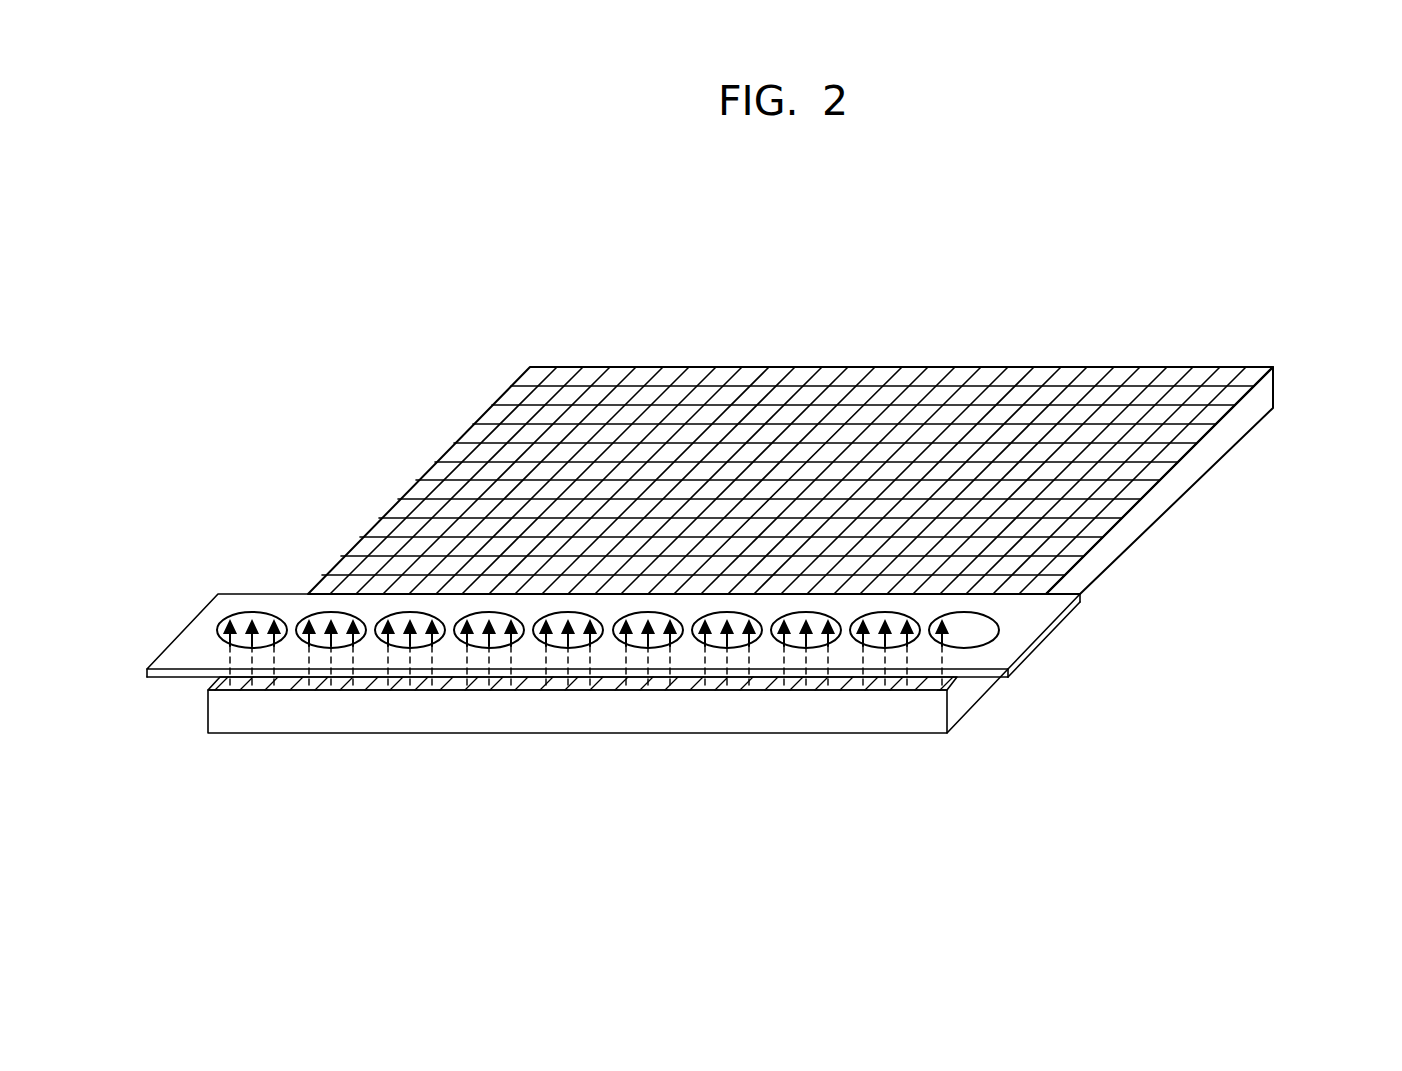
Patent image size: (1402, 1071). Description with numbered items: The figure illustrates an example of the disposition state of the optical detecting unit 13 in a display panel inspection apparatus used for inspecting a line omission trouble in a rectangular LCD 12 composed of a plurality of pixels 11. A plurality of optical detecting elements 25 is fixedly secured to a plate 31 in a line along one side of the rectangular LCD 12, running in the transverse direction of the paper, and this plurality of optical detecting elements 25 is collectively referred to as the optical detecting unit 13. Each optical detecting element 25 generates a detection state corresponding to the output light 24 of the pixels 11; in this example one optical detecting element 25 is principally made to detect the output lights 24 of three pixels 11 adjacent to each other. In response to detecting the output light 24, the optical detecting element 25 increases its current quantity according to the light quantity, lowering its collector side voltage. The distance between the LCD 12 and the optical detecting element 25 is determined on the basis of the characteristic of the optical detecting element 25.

The pixel 11 is at (268, 690).
The LCD 12 is at (1288, 394).
The optical detecting unit 13 is at (258, 560).
The output light 24 is at (240, 672).
The optical detecting element 25 is at (250, 612).
The plate 31 is at (1037, 612).